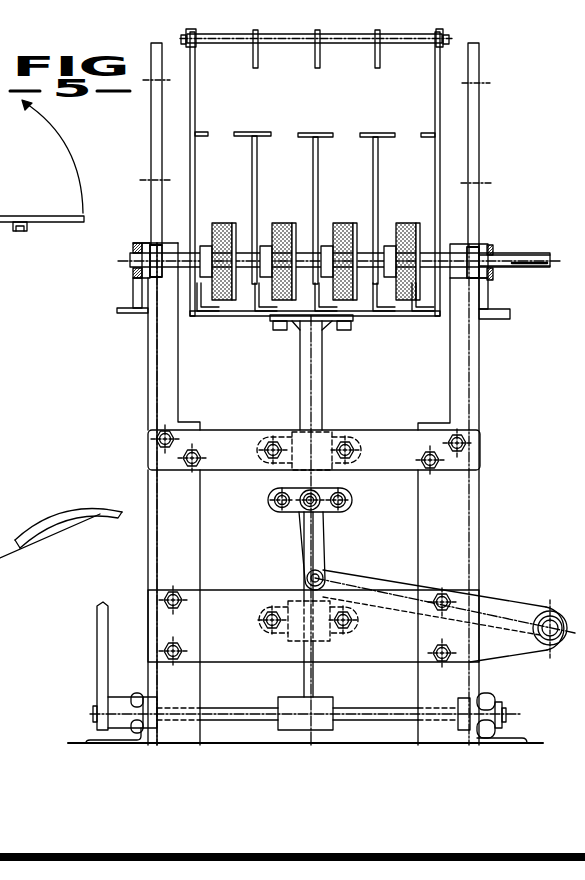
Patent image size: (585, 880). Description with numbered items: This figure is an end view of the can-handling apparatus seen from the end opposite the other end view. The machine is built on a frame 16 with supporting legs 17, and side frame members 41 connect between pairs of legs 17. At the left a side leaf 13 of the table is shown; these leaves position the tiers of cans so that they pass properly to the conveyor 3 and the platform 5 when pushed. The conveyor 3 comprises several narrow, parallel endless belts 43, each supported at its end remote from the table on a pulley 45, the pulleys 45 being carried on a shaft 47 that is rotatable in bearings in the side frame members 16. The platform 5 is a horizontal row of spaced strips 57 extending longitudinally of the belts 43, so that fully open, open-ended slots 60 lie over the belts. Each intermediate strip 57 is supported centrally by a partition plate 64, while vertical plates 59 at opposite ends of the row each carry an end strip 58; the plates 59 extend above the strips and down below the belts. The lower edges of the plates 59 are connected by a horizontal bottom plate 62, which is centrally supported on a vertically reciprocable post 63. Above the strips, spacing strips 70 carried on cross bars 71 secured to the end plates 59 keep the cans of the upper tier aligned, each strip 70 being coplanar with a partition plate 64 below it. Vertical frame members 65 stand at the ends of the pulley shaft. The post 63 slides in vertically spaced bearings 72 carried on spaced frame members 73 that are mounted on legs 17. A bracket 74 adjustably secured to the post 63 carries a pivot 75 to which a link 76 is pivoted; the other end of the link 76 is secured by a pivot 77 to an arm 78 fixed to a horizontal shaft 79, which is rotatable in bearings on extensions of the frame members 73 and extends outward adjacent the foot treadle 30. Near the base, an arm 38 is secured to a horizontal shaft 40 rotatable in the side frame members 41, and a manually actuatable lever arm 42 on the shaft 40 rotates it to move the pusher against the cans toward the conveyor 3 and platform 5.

The conveyor 3 is at (422, 236).
The platform 5 is at (327, 140).
The side leaves 13 is at (40, 216).
The frame 16 is at (117, 310).
The supporting legs 17 is at (197, 570).
The foot treadle 30 is at (27, 521).
The arm 38 is at (313, 680).
The horizontal shaft 40 is at (228, 708).
The side frame members 41 is at (141, 692).
The lever arm 42 is at (107, 639).
The endless belts 43 is at (222, 222).
The pulley 45 is at (359, 246).
The shaft 47 is at (505, 256).
The strips 57 is at (248, 131).
The end strip 58 is at (198, 131).
The vertical plates 59 is at (190, 199).
The open-ended slots 60 is at (289, 130).
The bottom plate 62 is at (233, 317).
The post 63 is at (322, 367).
The partition plate 64 is at (313, 167).
The vertical frame members 65 is at (151, 160).
The spacing strips 70 is at (314, 64).
The cross bars 71 is at (351, 33).
The bearings 72 is at (320, 438).
The frame members 73 is at (236, 434).
The bracket 74 is at (329, 512).
The pivot 75 is at (292, 514).
The link 76 is at (323, 551).
The pivot 77 is at (306, 577).
The arm 78 is at (372, 579).
The horizontal shaft 79 is at (545, 612).